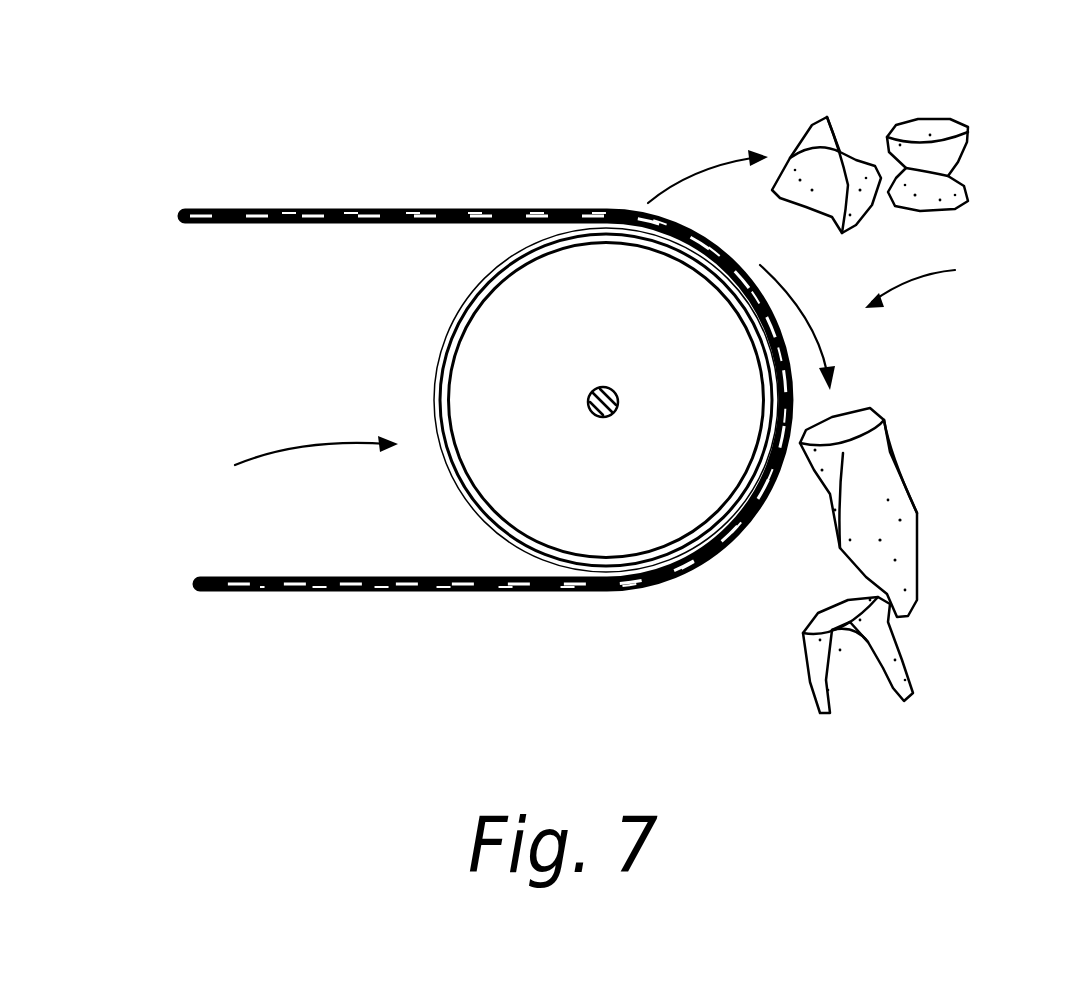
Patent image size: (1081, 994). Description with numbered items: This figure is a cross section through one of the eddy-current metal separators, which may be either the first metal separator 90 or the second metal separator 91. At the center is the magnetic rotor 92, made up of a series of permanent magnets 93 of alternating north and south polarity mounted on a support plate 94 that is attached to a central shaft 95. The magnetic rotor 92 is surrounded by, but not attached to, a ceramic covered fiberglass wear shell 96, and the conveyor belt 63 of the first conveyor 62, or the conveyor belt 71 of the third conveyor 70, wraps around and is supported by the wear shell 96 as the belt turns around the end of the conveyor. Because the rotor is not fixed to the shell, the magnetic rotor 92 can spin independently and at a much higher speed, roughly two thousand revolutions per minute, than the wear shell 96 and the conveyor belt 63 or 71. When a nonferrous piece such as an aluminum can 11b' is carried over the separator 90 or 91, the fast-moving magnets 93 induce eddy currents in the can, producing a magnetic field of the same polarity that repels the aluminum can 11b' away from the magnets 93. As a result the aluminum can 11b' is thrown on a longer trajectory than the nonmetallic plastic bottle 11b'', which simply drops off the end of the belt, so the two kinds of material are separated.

The conveyor belt 63 is at (485, 456).
The conveyor belt 71 is at (383, 593).
The magnetic rotor 92 is at (512, 432).
The support plate 94 is at (492, 490).
The ceramic covered fiberglass wear shell 96 is at (483, 538).
The permanent magnets 93 is at (577, 263).
The shaft 95 is at (640, 350).
The first metal separator 90 is at (283, 463).
The second metal separator 91 is at (283, 463).
The first conveyor 62 is at (937, 269).
The third conveyor 70 is at (937, 269).
The aluminum can 11b' is at (911, 150).
The nonmetallic plastic bottle 11b'' is at (936, 560).